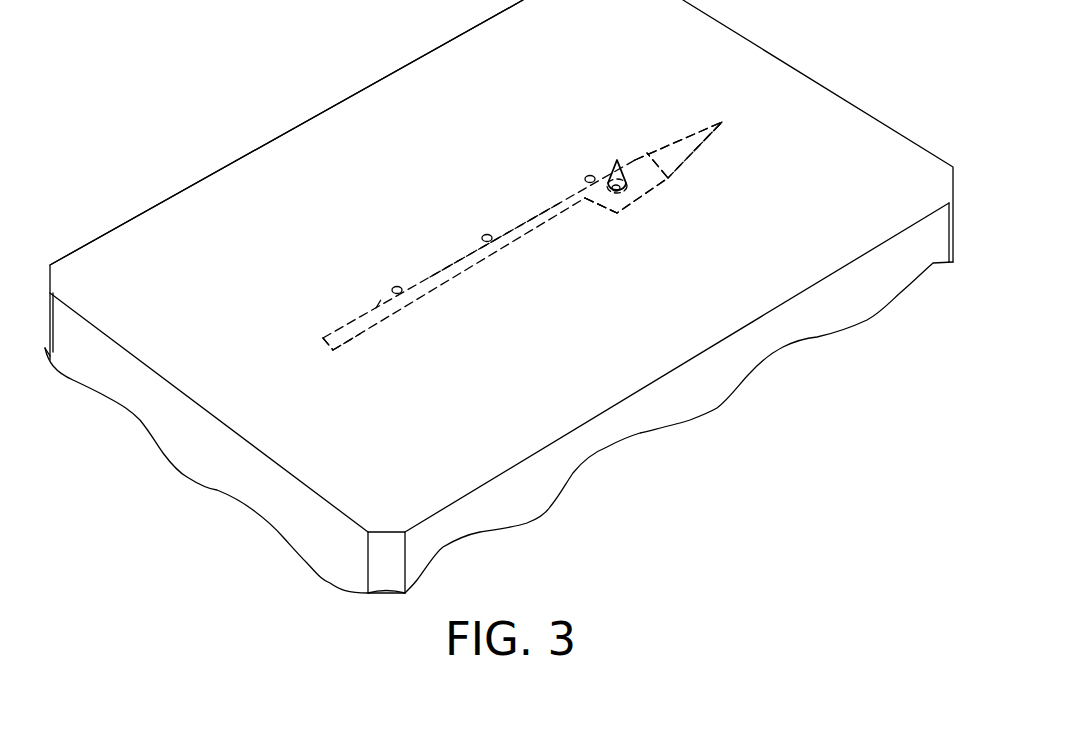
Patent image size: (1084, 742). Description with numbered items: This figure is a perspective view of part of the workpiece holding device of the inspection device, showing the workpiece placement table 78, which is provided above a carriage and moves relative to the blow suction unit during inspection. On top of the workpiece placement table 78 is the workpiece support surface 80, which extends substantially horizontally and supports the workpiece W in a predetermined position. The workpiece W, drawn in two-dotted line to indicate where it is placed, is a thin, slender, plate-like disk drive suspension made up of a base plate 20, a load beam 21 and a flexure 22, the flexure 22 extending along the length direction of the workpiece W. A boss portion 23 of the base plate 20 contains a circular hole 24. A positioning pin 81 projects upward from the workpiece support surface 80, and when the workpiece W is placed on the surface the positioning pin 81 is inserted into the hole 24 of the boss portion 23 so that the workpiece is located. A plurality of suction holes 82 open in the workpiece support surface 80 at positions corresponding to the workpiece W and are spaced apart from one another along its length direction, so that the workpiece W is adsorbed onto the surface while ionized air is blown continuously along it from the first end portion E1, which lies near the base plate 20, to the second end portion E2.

The workpiece placement table 78 is at (198, 453).
The workpiece support surface 80 is at (335, 125).
The workpiece W is at (549, 184).
The first end portion E1 is at (605, 160).
The second end portion E2 is at (345, 327).
The base plate 20 is at (636, 157).
The load beam 21 is at (688, 148).
The flexure 22 is at (517, 210).
The boss portion 23 is at (600, 194).
The hole 24 is at (630, 200).
The positioning pin 81 is at (631, 173).
The suction holes 82 is at (392, 286).